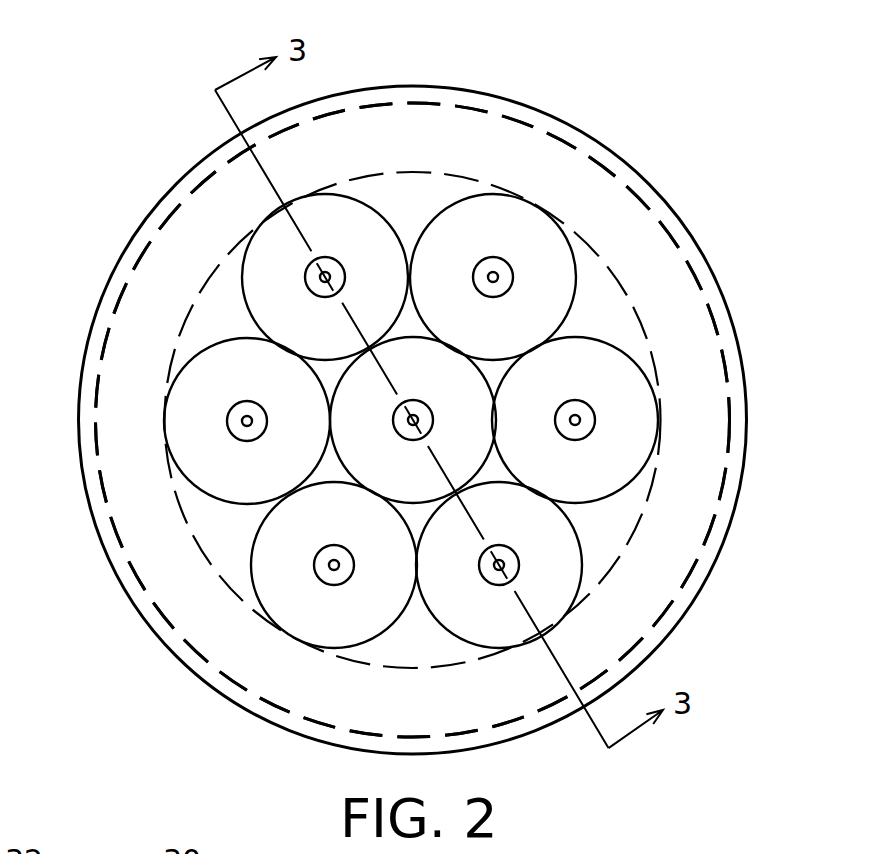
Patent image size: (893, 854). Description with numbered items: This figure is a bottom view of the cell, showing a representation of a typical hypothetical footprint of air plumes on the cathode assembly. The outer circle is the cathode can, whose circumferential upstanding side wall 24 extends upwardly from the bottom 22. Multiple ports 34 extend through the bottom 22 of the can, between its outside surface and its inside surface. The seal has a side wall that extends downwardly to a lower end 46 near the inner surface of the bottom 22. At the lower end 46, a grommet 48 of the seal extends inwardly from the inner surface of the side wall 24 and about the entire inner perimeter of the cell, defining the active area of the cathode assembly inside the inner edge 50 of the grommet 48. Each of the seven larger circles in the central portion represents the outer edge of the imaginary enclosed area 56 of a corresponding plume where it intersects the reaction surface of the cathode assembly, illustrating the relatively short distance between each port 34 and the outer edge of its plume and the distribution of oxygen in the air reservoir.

The bottom 22 is at (573, 192).
The side wall 24 is at (682, 218).
The ports 34 is at (427, 408).
The lower end 46 is at (338, 147).
The grommet 48 is at (513, 143).
The inner edge 50 is at (390, 170).
The imaginary enclosed area 56 is at (582, 562).